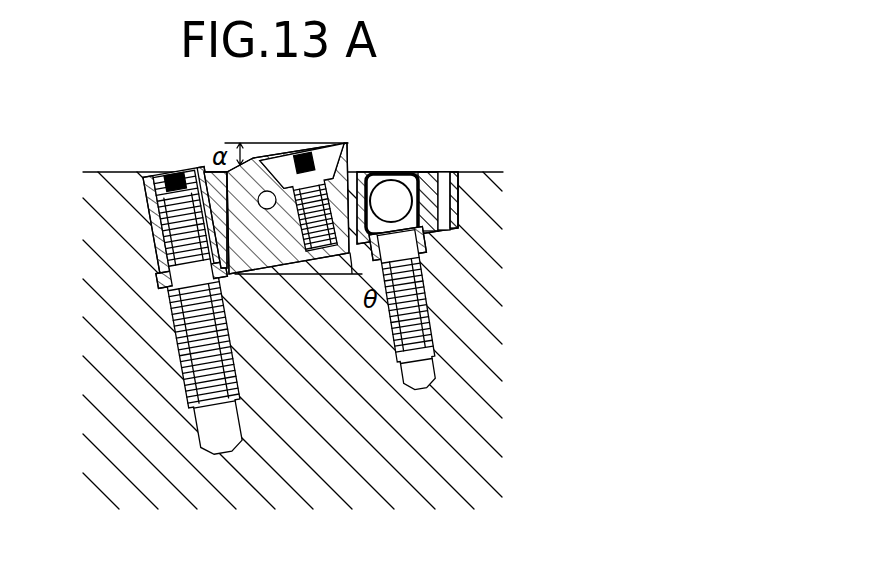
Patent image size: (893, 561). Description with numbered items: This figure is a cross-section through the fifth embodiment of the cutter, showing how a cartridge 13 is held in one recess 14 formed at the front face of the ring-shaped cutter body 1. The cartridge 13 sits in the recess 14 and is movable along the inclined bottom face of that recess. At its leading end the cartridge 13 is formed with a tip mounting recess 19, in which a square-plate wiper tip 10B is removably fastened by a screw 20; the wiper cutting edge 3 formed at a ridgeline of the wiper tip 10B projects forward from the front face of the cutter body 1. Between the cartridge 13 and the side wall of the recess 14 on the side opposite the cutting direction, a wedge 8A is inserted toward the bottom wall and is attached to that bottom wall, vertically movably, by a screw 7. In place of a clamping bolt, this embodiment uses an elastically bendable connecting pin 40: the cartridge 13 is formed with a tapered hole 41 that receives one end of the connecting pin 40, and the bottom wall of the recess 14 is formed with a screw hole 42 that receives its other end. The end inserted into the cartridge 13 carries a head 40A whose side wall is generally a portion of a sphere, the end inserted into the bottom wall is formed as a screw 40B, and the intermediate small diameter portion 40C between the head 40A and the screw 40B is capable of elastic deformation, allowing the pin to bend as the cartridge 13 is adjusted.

The cutter body 1 is at (486, 372).
The wiper cutting edge 3 is at (347, 146).
The screw 7 is at (173, 333).
The wedge 8A is at (212, 178).
The wiper tip 10B is at (263, 174).
The cartridge 13 is at (423, 172).
The recess 14 is at (440, 170).
The tip mounting recess 19 is at (243, 174).
The screw 20 is at (310, 177).
The connecting pin 40 is at (382, 174).
The head 40A is at (328, 159).
The screw 40B is at (430, 248).
The small diameter portion 40C is at (458, 216).
The tapered hole 41 is at (400, 173).
The screw hole 42 is at (427, 300).